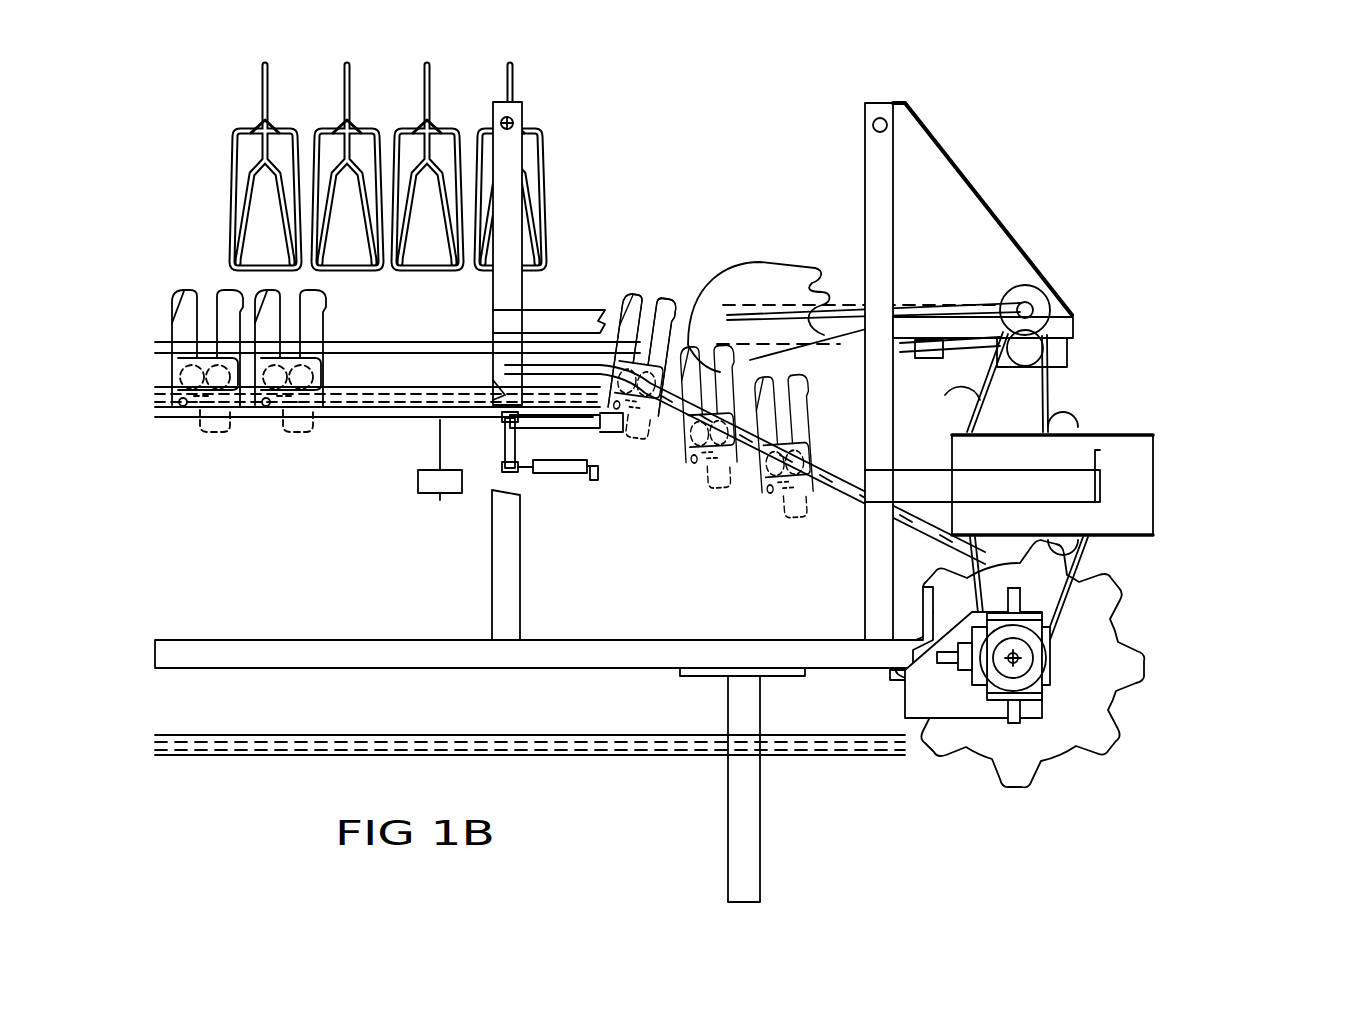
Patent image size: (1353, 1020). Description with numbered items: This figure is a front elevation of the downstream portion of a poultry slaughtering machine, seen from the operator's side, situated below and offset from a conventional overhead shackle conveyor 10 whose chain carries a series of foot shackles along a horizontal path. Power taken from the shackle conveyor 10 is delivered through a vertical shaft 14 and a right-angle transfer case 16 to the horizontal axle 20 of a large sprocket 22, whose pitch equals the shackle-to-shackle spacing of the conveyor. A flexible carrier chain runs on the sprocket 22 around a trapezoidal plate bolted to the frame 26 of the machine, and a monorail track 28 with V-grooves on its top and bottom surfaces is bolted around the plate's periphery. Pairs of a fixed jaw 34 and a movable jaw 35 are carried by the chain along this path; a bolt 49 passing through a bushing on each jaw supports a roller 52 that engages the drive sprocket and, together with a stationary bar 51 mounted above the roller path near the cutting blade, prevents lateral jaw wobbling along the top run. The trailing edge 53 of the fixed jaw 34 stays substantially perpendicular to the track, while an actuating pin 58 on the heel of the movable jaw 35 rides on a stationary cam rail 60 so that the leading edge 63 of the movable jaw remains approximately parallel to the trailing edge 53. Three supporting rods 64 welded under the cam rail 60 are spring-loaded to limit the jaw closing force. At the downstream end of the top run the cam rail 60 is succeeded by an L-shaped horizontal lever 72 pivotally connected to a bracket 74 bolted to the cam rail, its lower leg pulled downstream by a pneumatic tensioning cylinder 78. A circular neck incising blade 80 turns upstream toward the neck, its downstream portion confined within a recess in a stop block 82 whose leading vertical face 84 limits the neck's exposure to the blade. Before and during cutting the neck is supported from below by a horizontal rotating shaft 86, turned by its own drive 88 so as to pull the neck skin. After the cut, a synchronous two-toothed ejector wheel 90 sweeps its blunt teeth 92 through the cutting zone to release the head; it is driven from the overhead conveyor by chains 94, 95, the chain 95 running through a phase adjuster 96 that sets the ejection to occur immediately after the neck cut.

The overhead shackle conveyor 10 is at (548, 193).
The vertical shaft 14 is at (1023, 590).
The right-angle transfer case 16 is at (1050, 702).
The horizontal axle 20 is at (1063, 630).
The large sprocket 22 is at (1097, 747).
The frame 26 is at (743, 860).
The monorail track 28 is at (403, 375).
The fixed jaw 34 is at (855, 410).
The movable jaw 35 is at (648, 305).
The bolt 49 is at (827, 487).
The stationary bar 51 is at (505, 375).
The roller 52 is at (745, 478).
The trailing edge 53 is at (865, 305).
The actuating pin 58 is at (647, 379).
The stationary cam rail 60 is at (365, 413).
The leading edge 63 is at (853, 312).
The supporting rods 64 is at (440, 500).
The L-shaped horizontal lever 72 is at (620, 438).
The bracket 74 is at (503, 447).
The pneumatic tensioning cylinder 78 is at (552, 477).
The neck incising blade 80 is at (625, 351).
The stop block 82 is at (757, 303).
The leading vertical face 84 is at (653, 303).
The horizontal rotating shaft 86 is at (353, 342).
The drive 88 is at (960, 363).
The ejector wheel 90 is at (737, 267).
The blunt teeth 92 is at (822, 285).
The chain 94 is at (1043, 293).
The chain 95 is at (1057, 383).
The phase adjuster 96 is at (1153, 432).